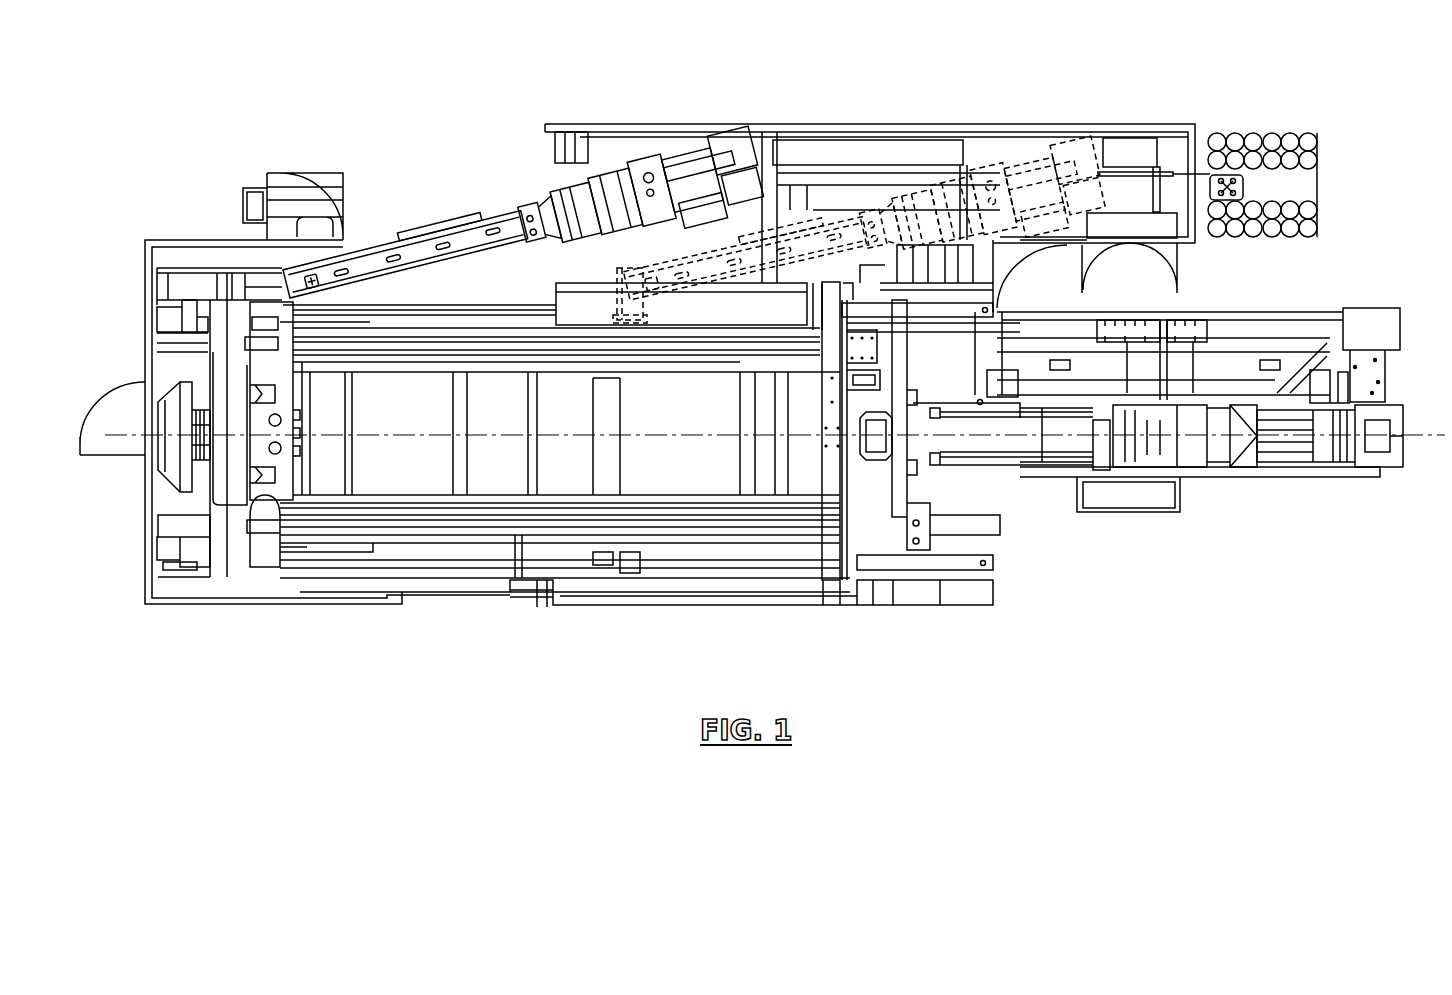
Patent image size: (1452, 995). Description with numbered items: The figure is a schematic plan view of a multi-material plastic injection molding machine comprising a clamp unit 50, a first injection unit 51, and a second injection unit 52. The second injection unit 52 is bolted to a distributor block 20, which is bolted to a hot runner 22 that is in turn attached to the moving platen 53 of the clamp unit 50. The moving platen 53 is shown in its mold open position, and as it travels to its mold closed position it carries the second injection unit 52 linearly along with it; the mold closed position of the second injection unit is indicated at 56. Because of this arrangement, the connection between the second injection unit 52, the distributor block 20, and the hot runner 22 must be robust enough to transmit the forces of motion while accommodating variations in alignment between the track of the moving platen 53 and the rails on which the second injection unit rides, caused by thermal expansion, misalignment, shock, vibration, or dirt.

The distributor block 20 is at (300, 282).
The hot runner 22 is at (272, 360).
The clamp unit 50 is at (342, 625).
The first injection unit 51 is at (1140, 560).
The second injection unit 52 is at (433, 187).
The moving platen 53 is at (217, 543).
The mold closed position for the second injection unit 56 is at (1012, 162).